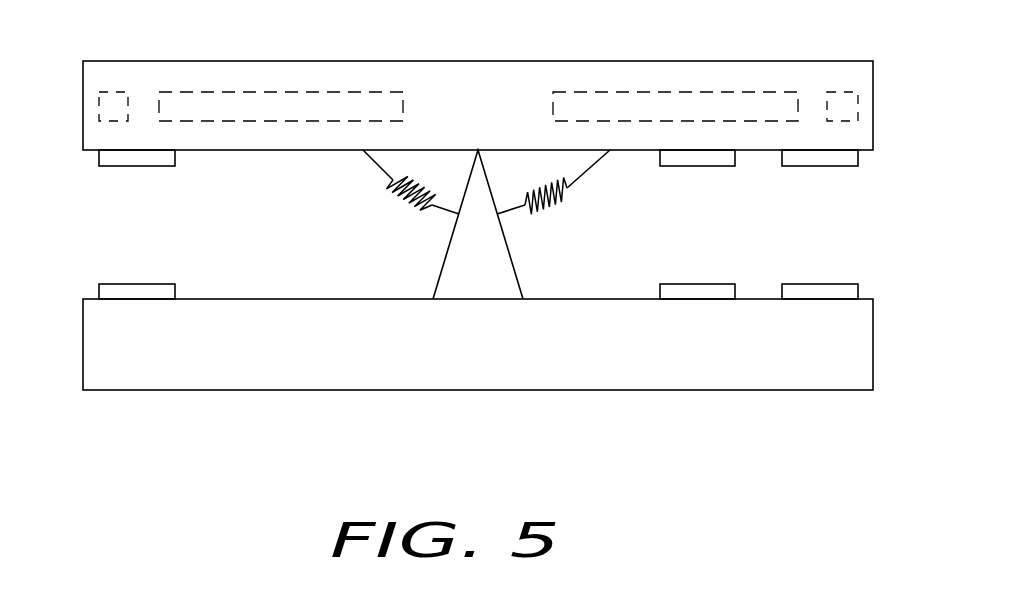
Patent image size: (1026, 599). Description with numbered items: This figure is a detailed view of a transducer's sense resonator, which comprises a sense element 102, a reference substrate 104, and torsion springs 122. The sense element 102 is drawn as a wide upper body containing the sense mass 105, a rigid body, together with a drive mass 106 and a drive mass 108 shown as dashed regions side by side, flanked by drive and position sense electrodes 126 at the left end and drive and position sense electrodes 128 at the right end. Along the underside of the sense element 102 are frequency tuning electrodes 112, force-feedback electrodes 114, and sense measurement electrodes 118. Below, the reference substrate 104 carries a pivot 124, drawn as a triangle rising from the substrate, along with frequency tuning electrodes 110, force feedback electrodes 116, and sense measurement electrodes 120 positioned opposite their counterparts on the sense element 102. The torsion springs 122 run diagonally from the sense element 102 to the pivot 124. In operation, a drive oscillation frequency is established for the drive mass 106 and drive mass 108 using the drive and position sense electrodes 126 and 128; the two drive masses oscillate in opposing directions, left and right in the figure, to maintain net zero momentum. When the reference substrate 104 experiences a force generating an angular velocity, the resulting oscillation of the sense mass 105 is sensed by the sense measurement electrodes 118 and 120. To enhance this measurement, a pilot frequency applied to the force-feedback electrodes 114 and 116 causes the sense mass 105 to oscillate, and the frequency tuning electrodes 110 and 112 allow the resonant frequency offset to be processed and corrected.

The sense element 102 is at (83, 110).
The reference substrate 104 is at (83, 349).
The sense mass 105 is at (493, 136).
The drive mass 106 is at (328, 91).
The drive mass 108 is at (700, 91).
The frequency tuning electrodes 110 is at (112, 284).
The frequency tuning electrodes 112 is at (120, 167).
The force-feedback electrodes 114 is at (705, 167).
The force feedback electrodes 116 is at (682, 284).
The sense measurement electrodes 118 is at (843, 167).
The sense measurement electrodes 120 is at (852, 284).
The torsion springs 122 is at (375, 164).
The pivot 124 is at (443, 272).
The drive and position sense electrodes 126 is at (125, 91).
The drive and position sense electrodes 128 is at (859, 106).